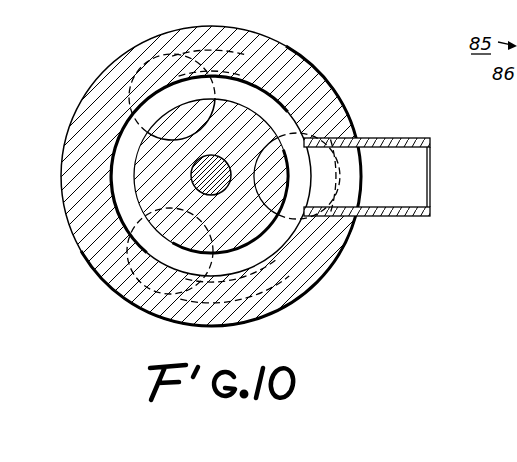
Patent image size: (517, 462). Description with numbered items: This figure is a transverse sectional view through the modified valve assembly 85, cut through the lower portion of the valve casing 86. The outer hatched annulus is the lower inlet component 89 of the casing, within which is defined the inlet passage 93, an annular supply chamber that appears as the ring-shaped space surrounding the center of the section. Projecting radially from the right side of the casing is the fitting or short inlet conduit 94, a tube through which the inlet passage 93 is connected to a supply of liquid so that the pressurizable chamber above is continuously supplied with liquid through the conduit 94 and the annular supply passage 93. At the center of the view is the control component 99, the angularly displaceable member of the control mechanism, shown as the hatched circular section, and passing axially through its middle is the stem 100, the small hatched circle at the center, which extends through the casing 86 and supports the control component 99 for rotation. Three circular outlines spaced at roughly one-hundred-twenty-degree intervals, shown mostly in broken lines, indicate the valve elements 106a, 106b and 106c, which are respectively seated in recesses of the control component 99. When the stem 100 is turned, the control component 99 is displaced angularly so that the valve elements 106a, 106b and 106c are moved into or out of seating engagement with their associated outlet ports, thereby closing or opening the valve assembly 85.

The valve assembly 85 is at (103, 54).
The valve casing 86 is at (84, 90).
The lower inlet component 89 is at (136, 180).
The inlet passage 93 is at (128, 209).
The inlet conduit 94 is at (360, 217).
The control component 99 is at (226, 87).
The stem 100 is at (224, 160).
The valve element 106a is at (352, 121).
The valve element 106b is at (126, 287).
The valve element 106c is at (194, 24).